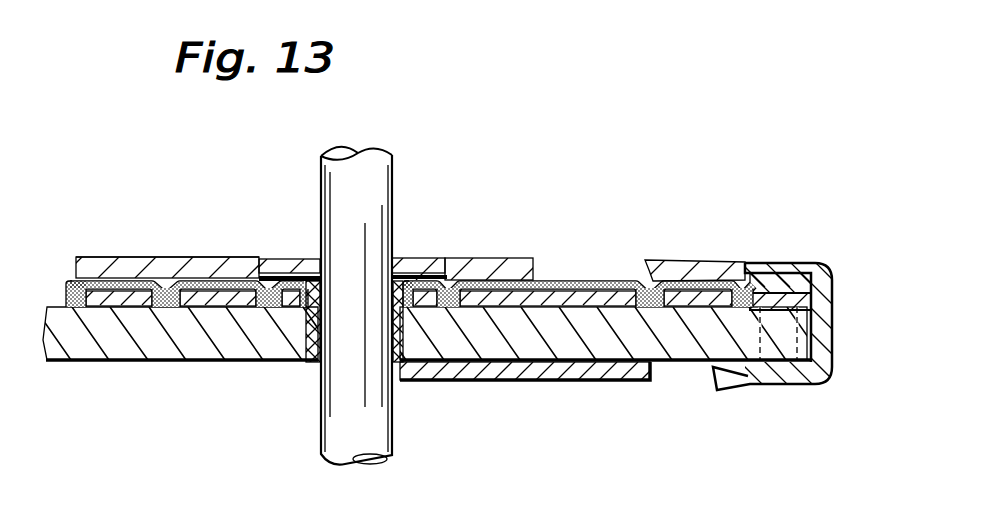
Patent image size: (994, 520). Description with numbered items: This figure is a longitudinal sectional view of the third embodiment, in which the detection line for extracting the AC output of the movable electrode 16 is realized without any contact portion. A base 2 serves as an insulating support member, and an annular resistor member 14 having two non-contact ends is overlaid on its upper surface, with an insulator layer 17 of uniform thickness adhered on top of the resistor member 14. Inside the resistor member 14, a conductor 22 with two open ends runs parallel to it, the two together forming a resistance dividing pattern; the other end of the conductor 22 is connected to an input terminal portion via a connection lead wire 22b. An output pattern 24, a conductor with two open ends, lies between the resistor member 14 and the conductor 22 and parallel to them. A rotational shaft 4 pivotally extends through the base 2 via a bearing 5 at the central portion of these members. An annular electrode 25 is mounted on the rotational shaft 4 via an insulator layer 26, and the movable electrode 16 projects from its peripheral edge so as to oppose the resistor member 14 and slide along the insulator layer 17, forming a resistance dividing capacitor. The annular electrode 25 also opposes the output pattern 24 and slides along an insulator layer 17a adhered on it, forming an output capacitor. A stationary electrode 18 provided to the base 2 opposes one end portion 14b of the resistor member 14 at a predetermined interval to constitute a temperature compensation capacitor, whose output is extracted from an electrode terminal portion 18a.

The base 2 is at (660, 352).
The rotational shaft 4 is at (392, 415).
The bearing 5 is at (312, 364).
The resistor member 14 is at (112, 312).
The end portion of the resistor member 14b is at (690, 310).
The movable electrode 16 is at (105, 257).
The insulator layer 17 is at (135, 281).
The insulator layer 17a is at (244, 279).
The stationary electrode 18 is at (700, 261).
The electrode terminal portion 18a is at (788, 386).
The conductor 22 is at (278, 310).
The connection lead wire 22b is at (538, 382).
The output pattern 24 is at (205, 300).
The annular electrode 25 is at (207, 257).
The insulator layer 26 is at (420, 258).